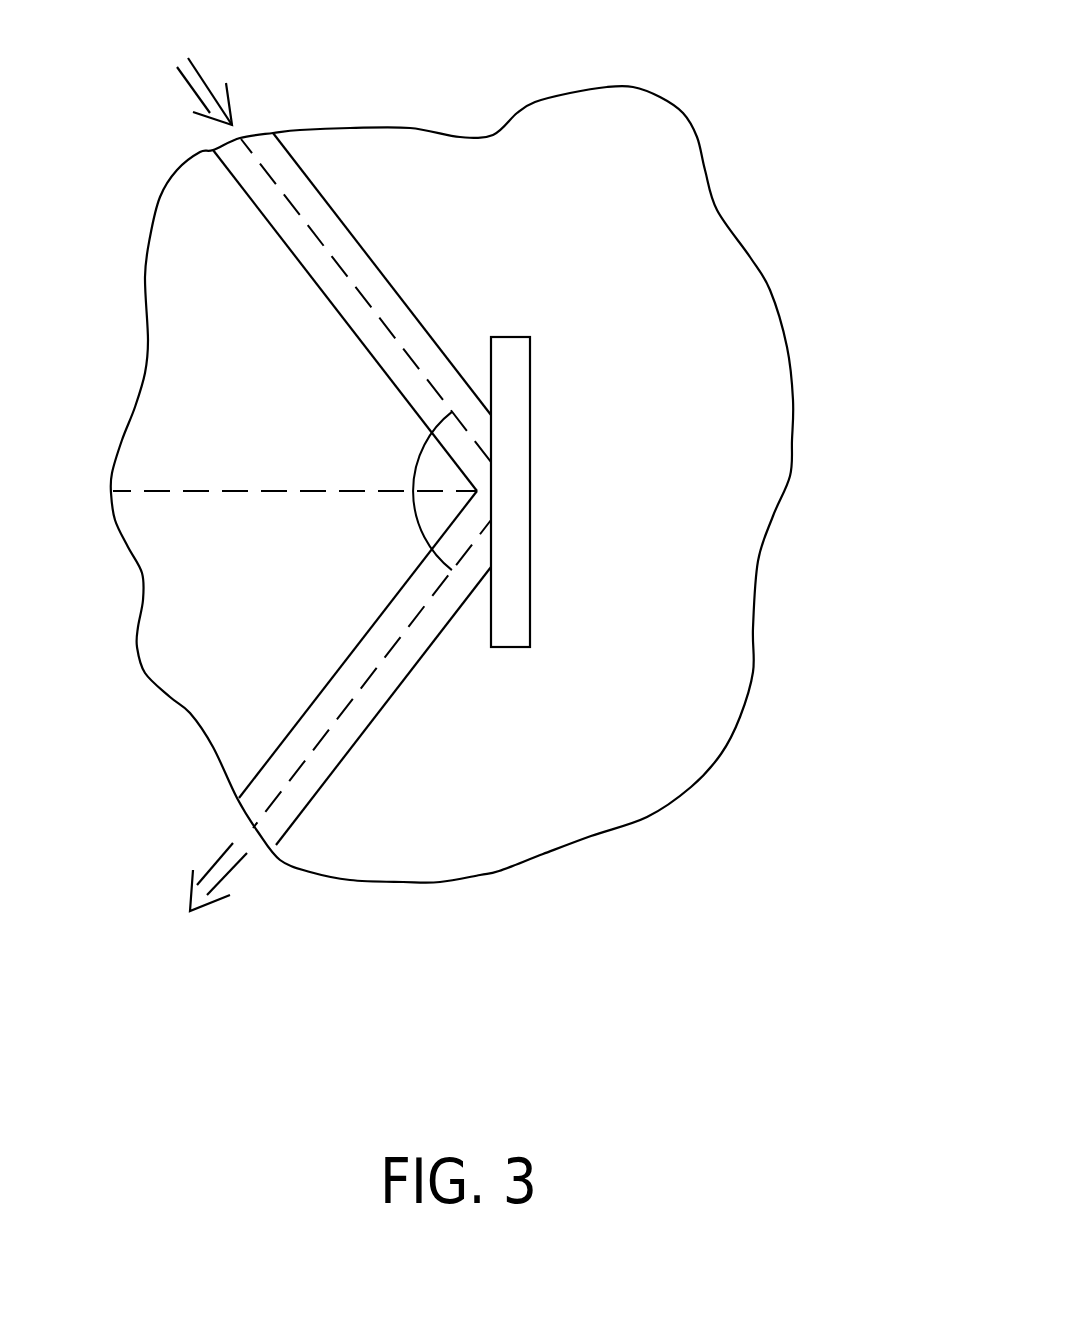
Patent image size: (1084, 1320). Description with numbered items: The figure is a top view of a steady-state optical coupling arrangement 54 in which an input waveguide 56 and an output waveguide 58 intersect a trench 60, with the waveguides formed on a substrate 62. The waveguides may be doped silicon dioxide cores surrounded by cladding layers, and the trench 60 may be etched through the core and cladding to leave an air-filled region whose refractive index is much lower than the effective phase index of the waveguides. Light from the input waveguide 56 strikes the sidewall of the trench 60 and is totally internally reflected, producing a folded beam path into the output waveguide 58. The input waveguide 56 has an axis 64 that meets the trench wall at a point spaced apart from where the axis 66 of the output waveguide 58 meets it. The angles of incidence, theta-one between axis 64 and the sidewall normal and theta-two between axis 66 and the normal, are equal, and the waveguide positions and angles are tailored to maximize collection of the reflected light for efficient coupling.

The steady-state optical coupling arrangement 54 is at (514, 484).
The input waveguide 56 is at (334, 274).
The output waveguide 58 is at (340, 701).
The trench 60 is at (513, 494).
The substrate 62 is at (723, 721).
The input waveguide axis 64 is at (394, 337).
The output waveguide axis 66 is at (400, 637).